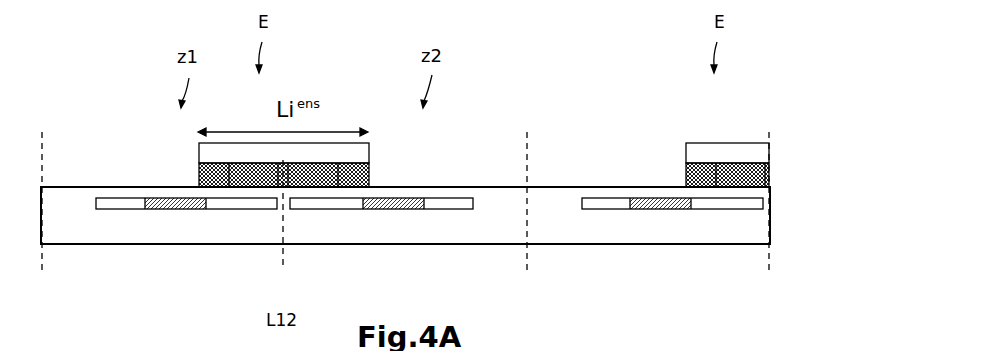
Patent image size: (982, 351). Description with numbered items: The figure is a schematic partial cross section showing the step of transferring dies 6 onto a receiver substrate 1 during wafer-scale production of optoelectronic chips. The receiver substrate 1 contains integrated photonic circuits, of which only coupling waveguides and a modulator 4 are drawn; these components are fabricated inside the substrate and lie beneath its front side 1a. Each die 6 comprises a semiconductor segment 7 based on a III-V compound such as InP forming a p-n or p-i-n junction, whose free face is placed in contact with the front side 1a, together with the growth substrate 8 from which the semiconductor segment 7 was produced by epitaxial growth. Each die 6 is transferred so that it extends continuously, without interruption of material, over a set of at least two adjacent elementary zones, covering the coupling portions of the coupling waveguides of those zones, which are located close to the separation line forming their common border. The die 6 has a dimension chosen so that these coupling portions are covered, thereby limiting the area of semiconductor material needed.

The receiver substrate 1 is at (781, 214).
The front side of the receiver substrate 1a is at (582, 187).
The modulator 4 is at (173, 214).
The die 6 is at (101, 159).
The semiconductor segment 7 is at (197, 175).
The growth substrate 8 is at (197, 153).